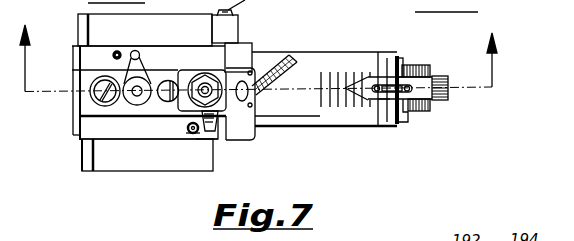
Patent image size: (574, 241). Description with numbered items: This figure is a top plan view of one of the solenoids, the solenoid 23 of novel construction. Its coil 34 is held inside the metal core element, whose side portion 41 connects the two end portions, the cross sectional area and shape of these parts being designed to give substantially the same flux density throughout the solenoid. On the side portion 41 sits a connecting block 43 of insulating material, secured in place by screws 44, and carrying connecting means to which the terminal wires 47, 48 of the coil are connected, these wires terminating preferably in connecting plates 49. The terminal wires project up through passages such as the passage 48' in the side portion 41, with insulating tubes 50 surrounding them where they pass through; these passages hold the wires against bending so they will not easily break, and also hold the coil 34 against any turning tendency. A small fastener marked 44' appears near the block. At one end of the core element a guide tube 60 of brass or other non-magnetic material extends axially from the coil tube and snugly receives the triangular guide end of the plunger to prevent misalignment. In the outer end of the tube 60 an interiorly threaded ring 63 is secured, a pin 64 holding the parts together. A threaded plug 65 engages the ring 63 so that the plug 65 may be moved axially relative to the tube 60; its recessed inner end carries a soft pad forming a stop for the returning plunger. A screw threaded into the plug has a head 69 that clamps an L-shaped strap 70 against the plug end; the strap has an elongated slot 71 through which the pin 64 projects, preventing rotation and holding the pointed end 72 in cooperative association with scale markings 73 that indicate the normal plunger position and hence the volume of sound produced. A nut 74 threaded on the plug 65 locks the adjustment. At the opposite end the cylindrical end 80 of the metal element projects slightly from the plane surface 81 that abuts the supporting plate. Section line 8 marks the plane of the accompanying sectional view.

The section line 8 is at (257, 58).
The solenoid 23 is at (300, 32).
The coil 34 is at (127, 160).
The side portion 41 is at (128, 128).
The connecting block 43 is at (92, 105).
The screws 44 is at (79, 121).
The pivot bolt 44' is at (124, 37).
The terminal wire 47 is at (133, 61).
The terminal wire 48 is at (182, 168).
The passage 48' is at (171, 151).
The connecting plates 49 is at (128, 78).
The insulating tubes 50 is at (112, 55).
The guide tube 60 is at (308, 58).
The interiorly threaded ring 63 is at (390, 58).
The pin 64 is at (381, 85).
The threaded plug 65 is at (417, 65).
The head 69 is at (437, 77).
The L-shaped strap 70 is at (420, 93).
The elongated slot 71 is at (383, 100).
The pointed end 72 is at (347, 100).
The scale markings 73 is at (327, 100).
The nut 74 is at (407, 114).
The cylindrical end 80 is at (77, 46).
The plane surface 81 is at (82, 153).